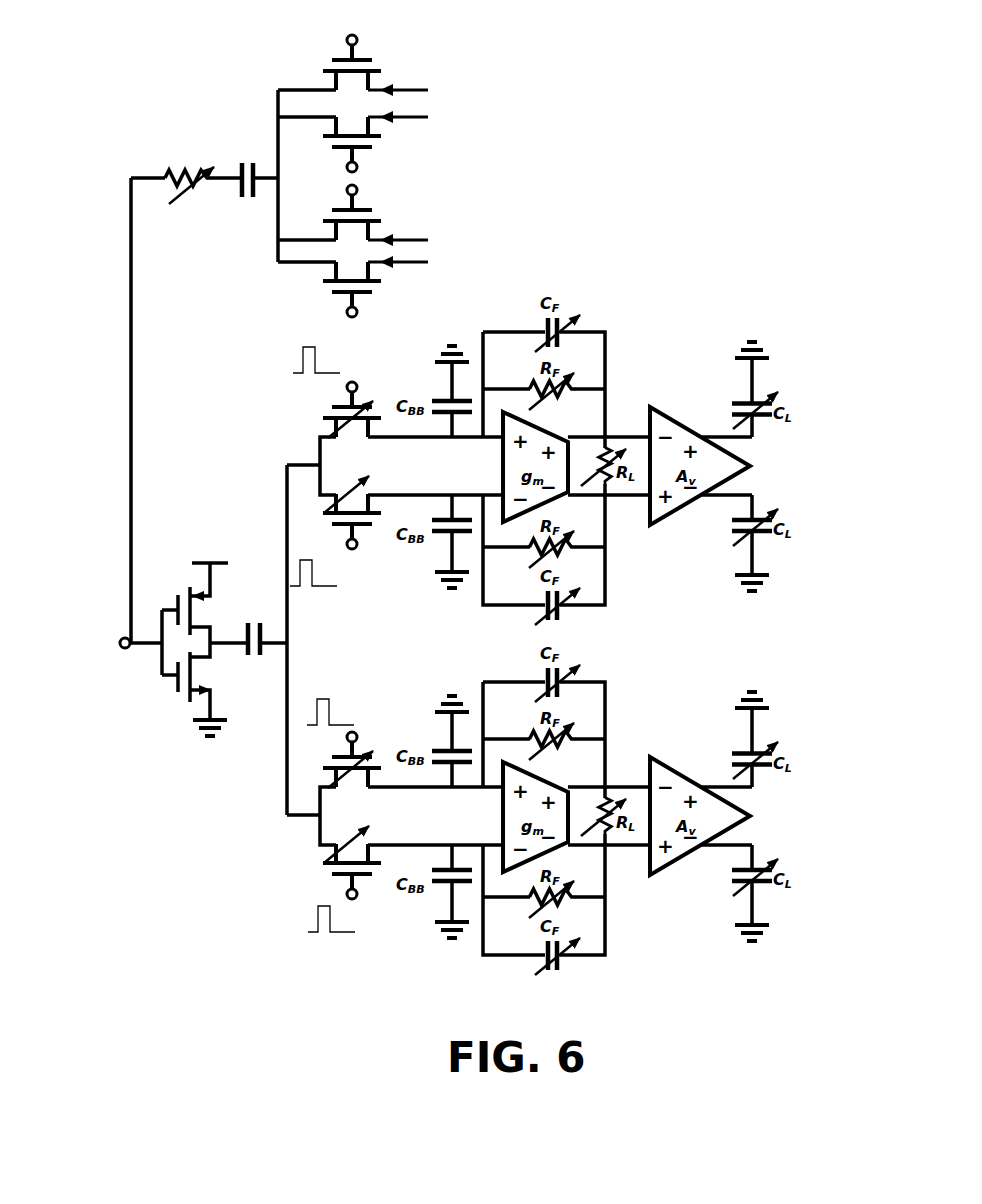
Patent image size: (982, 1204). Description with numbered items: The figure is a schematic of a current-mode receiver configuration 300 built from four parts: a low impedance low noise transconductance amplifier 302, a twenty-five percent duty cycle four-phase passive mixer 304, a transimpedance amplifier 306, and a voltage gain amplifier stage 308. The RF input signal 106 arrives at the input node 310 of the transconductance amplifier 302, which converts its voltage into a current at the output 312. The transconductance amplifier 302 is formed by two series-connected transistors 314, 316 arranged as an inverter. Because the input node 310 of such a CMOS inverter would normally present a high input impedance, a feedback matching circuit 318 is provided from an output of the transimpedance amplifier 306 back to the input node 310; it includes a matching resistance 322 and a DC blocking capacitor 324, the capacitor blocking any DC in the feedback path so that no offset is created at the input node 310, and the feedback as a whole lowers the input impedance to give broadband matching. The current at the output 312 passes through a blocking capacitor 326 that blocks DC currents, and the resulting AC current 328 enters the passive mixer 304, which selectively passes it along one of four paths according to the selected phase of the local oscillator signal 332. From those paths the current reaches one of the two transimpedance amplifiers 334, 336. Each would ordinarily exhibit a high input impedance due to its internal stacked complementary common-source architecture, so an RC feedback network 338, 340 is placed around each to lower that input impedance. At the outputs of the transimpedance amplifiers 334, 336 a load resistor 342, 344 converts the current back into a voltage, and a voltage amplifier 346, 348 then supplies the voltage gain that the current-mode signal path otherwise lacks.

The RF input signal 106 is at (122, 632).
The current-mode receiver configuration 300 is at (703, 98).
The low impedance low noise transconductance amplifier 302 is at (153, 787).
The 25% duty cycle 4-phase passive mixer 304 is at (246, 888).
The transimpedance amplifier 306 is at (566, 252).
The voltage gain amplifier stage 308 is at (764, 286).
The input node 310 is at (142, 648).
The output 312 is at (222, 637).
The transistor 314 is at (167, 577).
The transistor 316 is at (166, 701).
The feedback matching circuit 318 is at (271, 56).
The matching resistance 322 is at (148, 132).
The DC blocking capacitor 324 is at (243, 200).
The blocking capacitor 326 is at (262, 640).
The AC current 328 is at (287, 470).
The local oscillator signal 332 is at (296, 344).
The transimpedance amplifier 334 is at (503, 470).
The transimpedance amplifier 336 is at (503, 820).
The RC feedback network 338 is at (600, 302).
The RC feedback network 340 is at (614, 684).
The load resistor 342 is at (610, 493).
The load resistor 344 is at (610, 843).
The voltage amplifier 346 is at (668, 413).
The voltage amplifier 348 is at (667, 762).